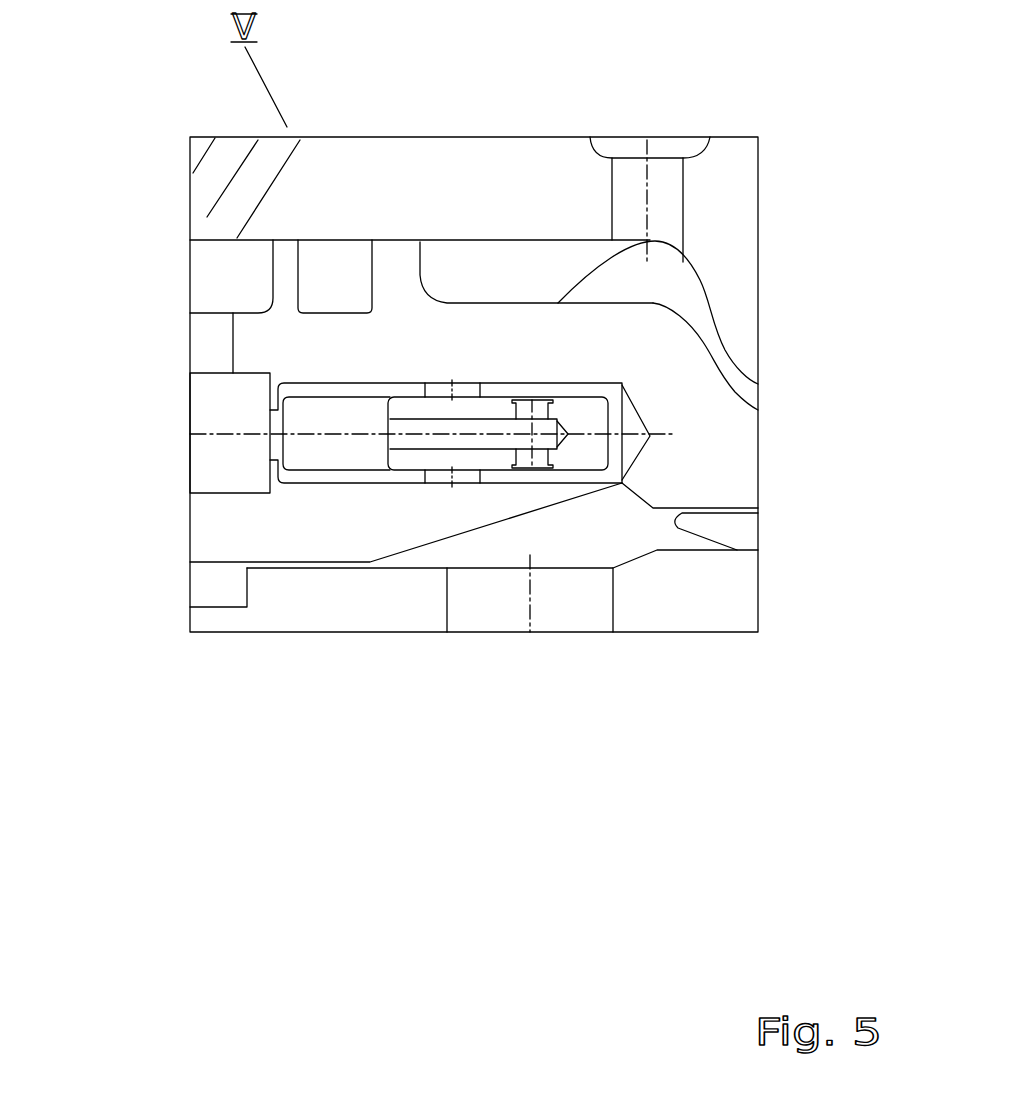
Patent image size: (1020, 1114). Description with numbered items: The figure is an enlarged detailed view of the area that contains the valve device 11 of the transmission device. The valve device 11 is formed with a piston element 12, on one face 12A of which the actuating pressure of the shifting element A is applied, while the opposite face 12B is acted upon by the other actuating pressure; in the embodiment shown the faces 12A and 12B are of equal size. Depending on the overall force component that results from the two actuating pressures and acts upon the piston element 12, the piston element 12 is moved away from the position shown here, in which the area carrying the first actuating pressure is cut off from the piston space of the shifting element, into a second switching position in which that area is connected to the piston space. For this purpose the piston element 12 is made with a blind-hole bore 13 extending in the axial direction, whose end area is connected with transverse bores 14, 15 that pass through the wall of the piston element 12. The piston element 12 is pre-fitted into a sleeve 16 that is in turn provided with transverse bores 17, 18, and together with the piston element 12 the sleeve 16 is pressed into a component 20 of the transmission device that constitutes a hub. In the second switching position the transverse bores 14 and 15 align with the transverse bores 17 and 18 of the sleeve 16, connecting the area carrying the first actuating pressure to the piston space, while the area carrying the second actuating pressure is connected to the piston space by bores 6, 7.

The bore 6 is at (632, 190).
The bore 7 is at (652, 241).
The valve device 11 is at (310, 486).
The piston element 12 is at (497, 458).
The face of the piston element 12A is at (270, 468).
The opposite face of the piston element 12B is at (622, 447).
The blind-hole bore 13 is at (392, 448).
The transverse bore 14 is at (553, 398).
The transverse bore 15 is at (543, 470).
The sleeve 16 is at (598, 475).
The transverse bore of the sleeve 17 is at (440, 477).
The transverse bore of the sleeve 18 is at (423, 385).
The component of the transmission device 20 is at (393, 270).